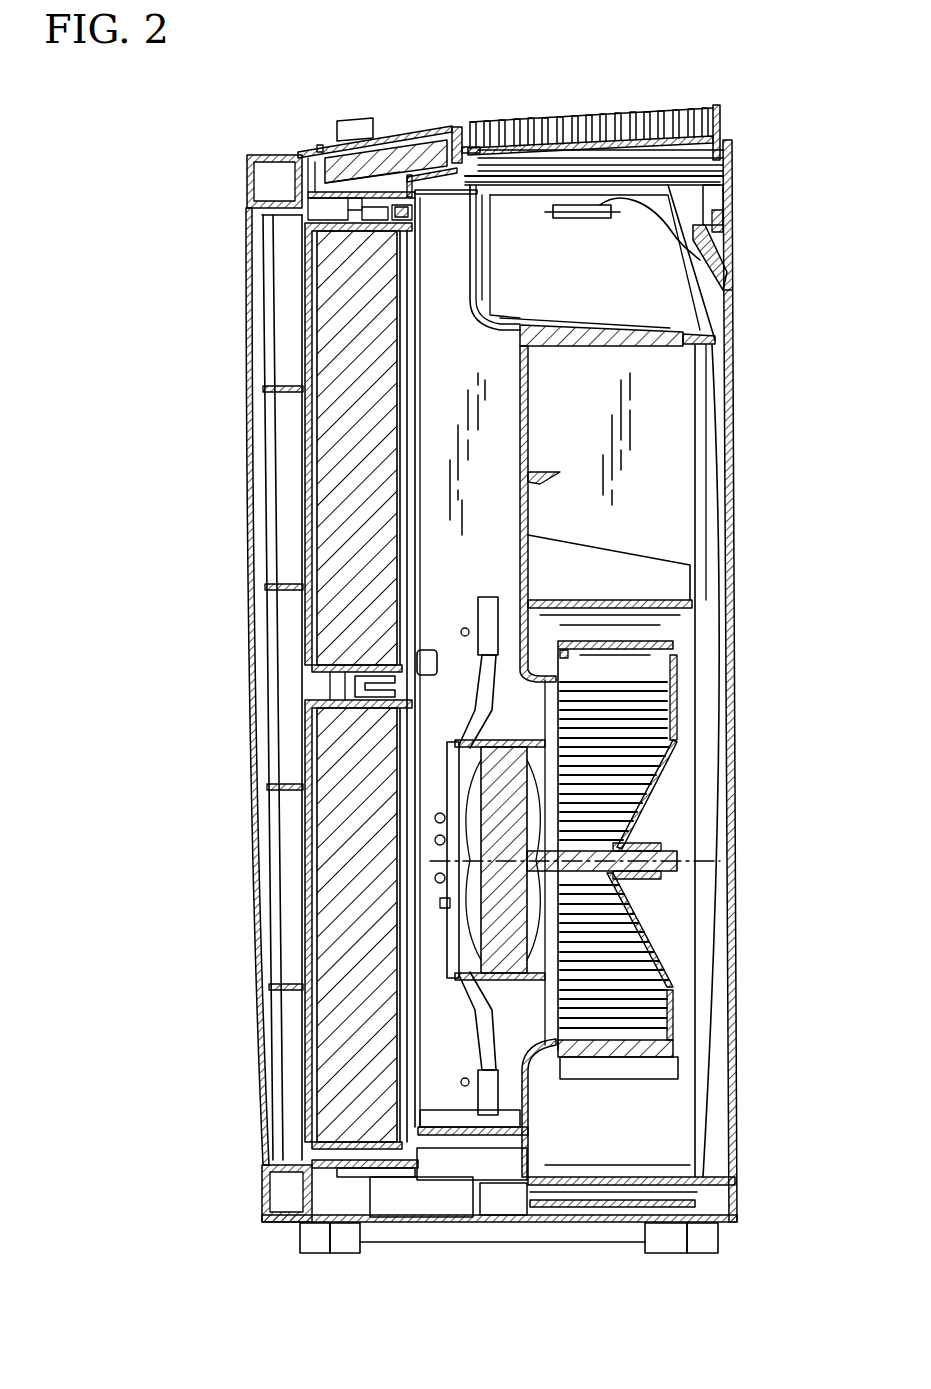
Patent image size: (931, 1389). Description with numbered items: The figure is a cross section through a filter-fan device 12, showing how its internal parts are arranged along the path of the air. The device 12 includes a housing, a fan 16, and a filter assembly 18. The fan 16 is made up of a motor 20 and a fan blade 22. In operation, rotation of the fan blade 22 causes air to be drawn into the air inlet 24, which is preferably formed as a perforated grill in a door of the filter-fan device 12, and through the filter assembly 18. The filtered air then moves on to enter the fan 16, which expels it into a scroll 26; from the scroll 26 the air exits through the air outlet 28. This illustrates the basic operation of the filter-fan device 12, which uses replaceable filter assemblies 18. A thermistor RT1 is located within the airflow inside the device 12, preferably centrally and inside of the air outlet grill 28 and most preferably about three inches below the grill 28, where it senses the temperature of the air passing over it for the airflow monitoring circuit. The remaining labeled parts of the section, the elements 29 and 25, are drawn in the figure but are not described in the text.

The filter-fan device 12 is at (142, 203).
The top front frame 29 is at (258, 156).
The air outlet 28 is at (558, 108).
The thermistor RT1 is at (710, 246).
The outer door shell 25 is at (248, 304).
The air inlet 24 is at (248, 405).
The filter assembly 18 is at (305, 512).
The motor 20 is at (452, 745).
The fan 16 is at (673, 643).
The fan blade 22 is at (668, 763).
The scroll 26 is at (667, 1130).